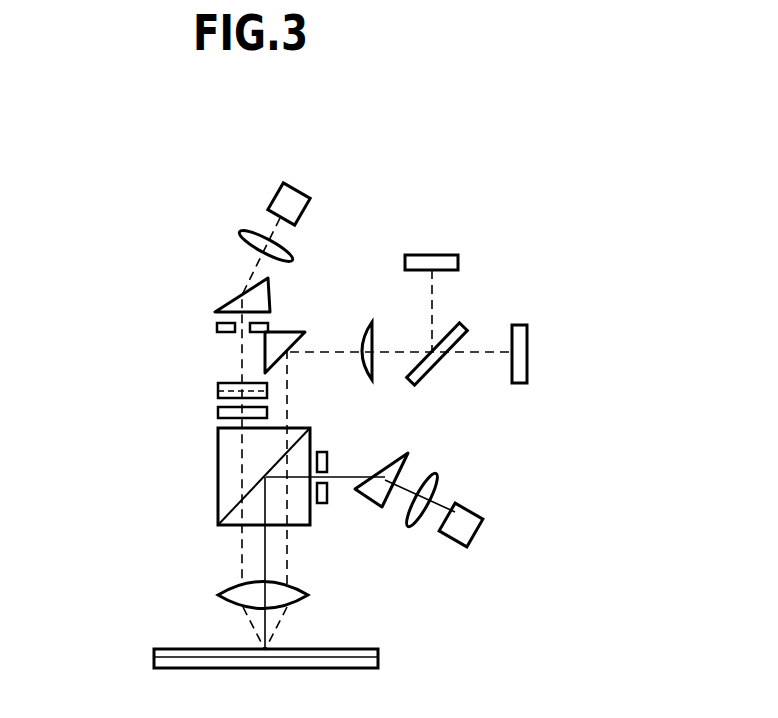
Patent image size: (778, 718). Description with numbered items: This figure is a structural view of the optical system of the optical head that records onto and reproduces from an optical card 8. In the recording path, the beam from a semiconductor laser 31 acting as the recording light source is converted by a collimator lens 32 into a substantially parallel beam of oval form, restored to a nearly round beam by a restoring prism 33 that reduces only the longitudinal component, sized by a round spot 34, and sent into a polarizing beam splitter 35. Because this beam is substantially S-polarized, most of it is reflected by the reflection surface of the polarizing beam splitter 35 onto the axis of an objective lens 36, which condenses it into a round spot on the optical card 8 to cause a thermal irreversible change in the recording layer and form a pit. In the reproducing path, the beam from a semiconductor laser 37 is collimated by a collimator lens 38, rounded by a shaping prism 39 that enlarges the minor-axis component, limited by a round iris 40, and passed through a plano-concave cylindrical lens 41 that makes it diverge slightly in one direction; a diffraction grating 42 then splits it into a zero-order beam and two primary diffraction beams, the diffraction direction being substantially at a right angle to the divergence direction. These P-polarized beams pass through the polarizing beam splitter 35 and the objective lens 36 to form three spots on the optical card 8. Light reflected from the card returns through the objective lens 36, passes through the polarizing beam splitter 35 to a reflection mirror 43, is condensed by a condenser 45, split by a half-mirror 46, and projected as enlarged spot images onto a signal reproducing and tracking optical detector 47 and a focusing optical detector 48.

The optical card 8 is at (187, 650).
The semiconductor laser 31 is at (480, 510).
The collimator lens 32 is at (433, 478).
The restoring prism 33 is at (395, 460).
The round spot 34 is at (322, 452).
The polarizing beam splitter 35 is at (218, 457).
The objective lens 36 is at (230, 588).
The semiconductor laser 37 is at (277, 188).
The collimator lens 38 is at (240, 232).
The shaping prism 39 is at (237, 298).
The round iris 40 is at (218, 325).
The plano-concave cylindrical lens 41 is at (222, 386).
The diffraction grating 42 is at (218, 413).
The reflection mirror 43 is at (295, 330).
The condenser 45 is at (365, 322).
The half-mirror 46 is at (453, 327).
The signal reproducing and tracking optical detector 47 is at (527, 335).
The focusing optical detector 48 is at (443, 255).